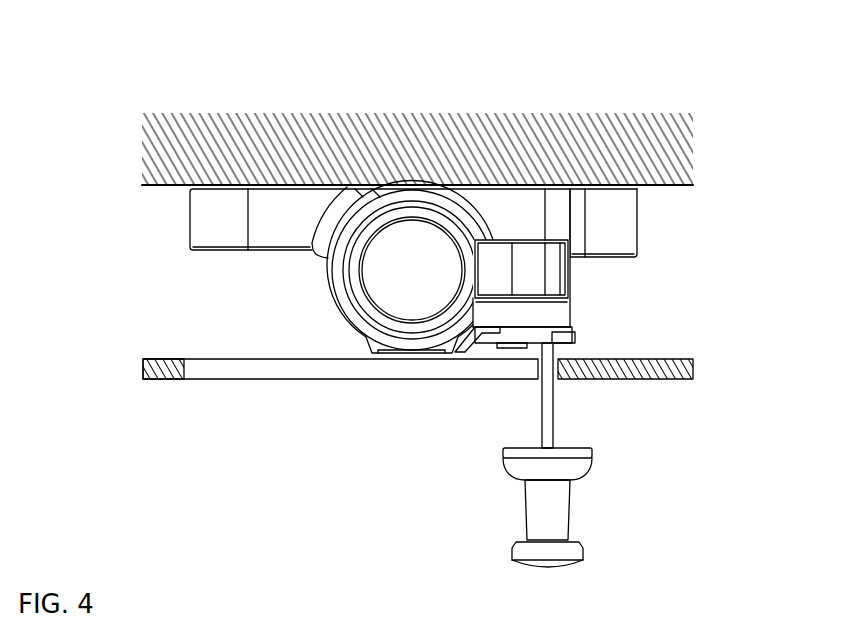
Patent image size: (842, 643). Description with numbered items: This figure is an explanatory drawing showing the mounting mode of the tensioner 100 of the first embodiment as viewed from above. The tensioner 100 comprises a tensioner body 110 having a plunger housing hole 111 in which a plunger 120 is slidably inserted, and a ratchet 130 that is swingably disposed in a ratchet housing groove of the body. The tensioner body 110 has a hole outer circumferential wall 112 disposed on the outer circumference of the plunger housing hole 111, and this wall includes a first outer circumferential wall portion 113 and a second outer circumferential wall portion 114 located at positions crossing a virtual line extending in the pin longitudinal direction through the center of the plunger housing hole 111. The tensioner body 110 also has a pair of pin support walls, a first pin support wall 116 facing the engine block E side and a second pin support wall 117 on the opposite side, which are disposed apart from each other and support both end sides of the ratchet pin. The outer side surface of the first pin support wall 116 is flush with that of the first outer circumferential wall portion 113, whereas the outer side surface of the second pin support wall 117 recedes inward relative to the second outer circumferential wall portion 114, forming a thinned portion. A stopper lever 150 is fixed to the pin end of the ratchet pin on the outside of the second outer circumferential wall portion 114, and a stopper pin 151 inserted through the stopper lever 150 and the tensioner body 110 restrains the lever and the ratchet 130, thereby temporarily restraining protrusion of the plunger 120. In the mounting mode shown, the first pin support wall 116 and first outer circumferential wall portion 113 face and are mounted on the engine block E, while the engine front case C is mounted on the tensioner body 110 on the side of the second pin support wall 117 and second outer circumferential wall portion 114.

The tensioner 100 is at (163, 242).
The tensioner body 110 is at (296, 207).
The plunger housing hole 111 is at (390, 268).
The hole outer circumferential wall 112 is at (337, 275).
The first outer circumferential wall portion 113 is at (417, 195).
The second outer circumferential wall portion 114 is at (407, 325).
The first pin support wall 116 is at (519, 233).
The second pin support wall 117 is at (517, 307).
The plunger 120 is at (325, 337).
The ratchet 130 is at (534, 270).
The stopper lever 150 is at (577, 338).
The stopper pin 151 is at (560, 518).
The engine block E is at (667, 147).
The engine front case C is at (690, 385).